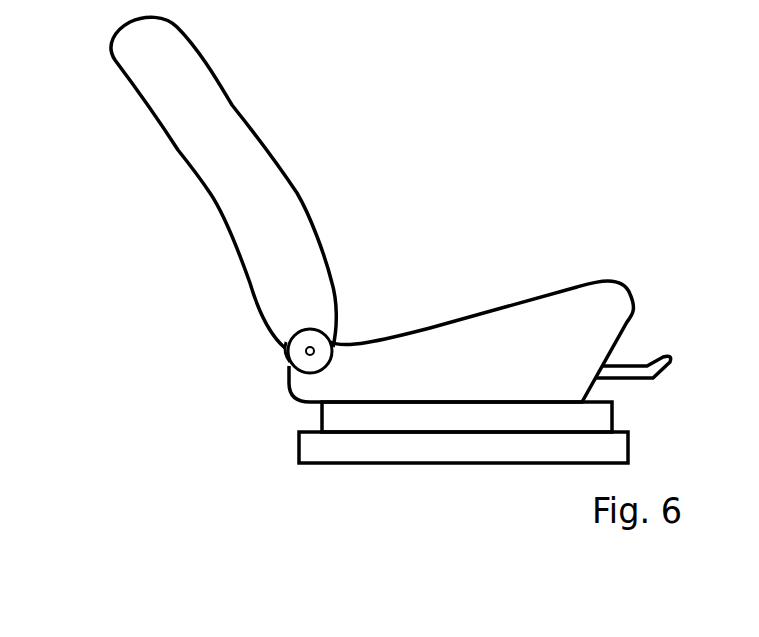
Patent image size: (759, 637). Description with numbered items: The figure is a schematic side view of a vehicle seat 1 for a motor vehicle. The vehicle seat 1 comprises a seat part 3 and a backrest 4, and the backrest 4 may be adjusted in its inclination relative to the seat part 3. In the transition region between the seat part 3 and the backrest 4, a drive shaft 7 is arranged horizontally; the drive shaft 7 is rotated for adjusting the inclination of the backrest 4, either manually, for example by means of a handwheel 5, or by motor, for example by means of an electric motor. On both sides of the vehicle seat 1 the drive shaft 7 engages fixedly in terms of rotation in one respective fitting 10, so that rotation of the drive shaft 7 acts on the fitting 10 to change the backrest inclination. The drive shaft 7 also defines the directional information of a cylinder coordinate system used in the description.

The vehicle seat 1 is at (356, 144).
The seat part 3 is at (488, 325).
The backrest 4 is at (207, 115).
The handwheel 5 is at (334, 343).
The drive shaft 7 is at (306, 355).
The fitting 10 is at (276, 358).